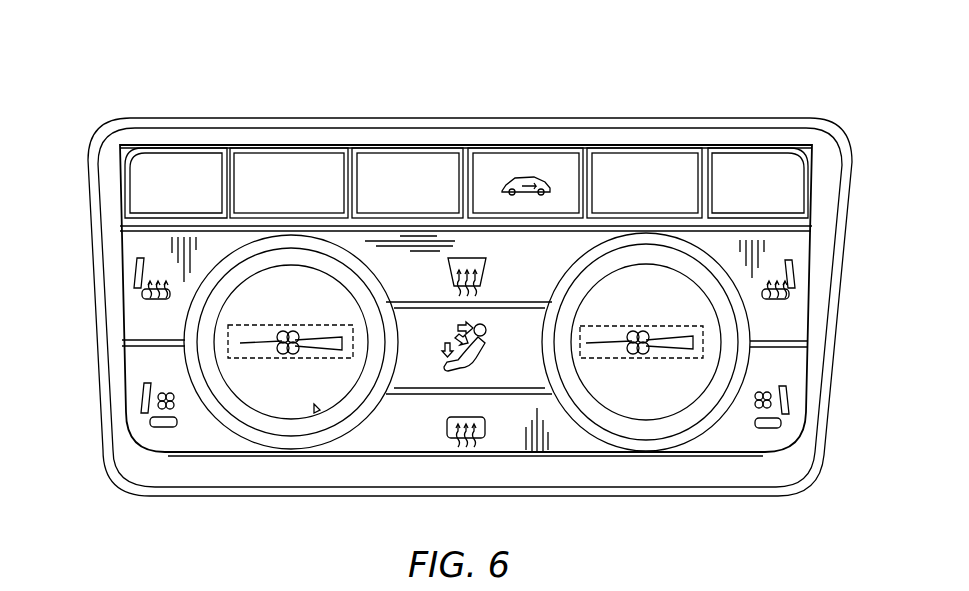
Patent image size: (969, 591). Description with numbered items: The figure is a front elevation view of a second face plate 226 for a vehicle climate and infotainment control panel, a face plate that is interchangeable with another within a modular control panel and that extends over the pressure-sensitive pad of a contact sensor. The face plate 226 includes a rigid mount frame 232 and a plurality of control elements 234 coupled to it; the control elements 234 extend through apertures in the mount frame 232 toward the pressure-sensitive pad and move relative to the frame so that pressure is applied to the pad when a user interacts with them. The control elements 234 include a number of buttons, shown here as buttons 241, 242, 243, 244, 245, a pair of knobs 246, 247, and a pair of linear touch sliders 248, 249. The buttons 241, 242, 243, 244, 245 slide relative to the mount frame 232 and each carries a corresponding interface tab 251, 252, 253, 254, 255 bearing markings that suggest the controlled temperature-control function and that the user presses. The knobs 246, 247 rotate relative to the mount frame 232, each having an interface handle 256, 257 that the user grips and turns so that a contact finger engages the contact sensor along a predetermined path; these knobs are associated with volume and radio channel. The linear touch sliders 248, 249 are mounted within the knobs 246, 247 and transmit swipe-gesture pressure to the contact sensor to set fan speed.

The second face plate 226 is at (124, 110).
The mount frame 232 is at (808, 227).
The control elements 234 is at (667, 145).
The button 244 is at (487, 149).
The interface tab 254 is at (519, 156).
The button 245 is at (407, 156).
The interface tab 255 is at (372, 156).
The interface handle 256 is at (290, 449).
The knob 246 is at (329, 431).
The linear touch slider 248 is at (326, 320).
The interface handle 257 is at (648, 450).
The knob 247 is at (675, 429).
The linear touch slider 249 is at (598, 320).
The interface tab 251 is at (124, 284).
The button 241 is at (124, 329).
The button 242 is at (798, 318).
The interface tab 252 is at (798, 329).
The button 243 is at (560, 461).
The interface tab 253 is at (510, 456).